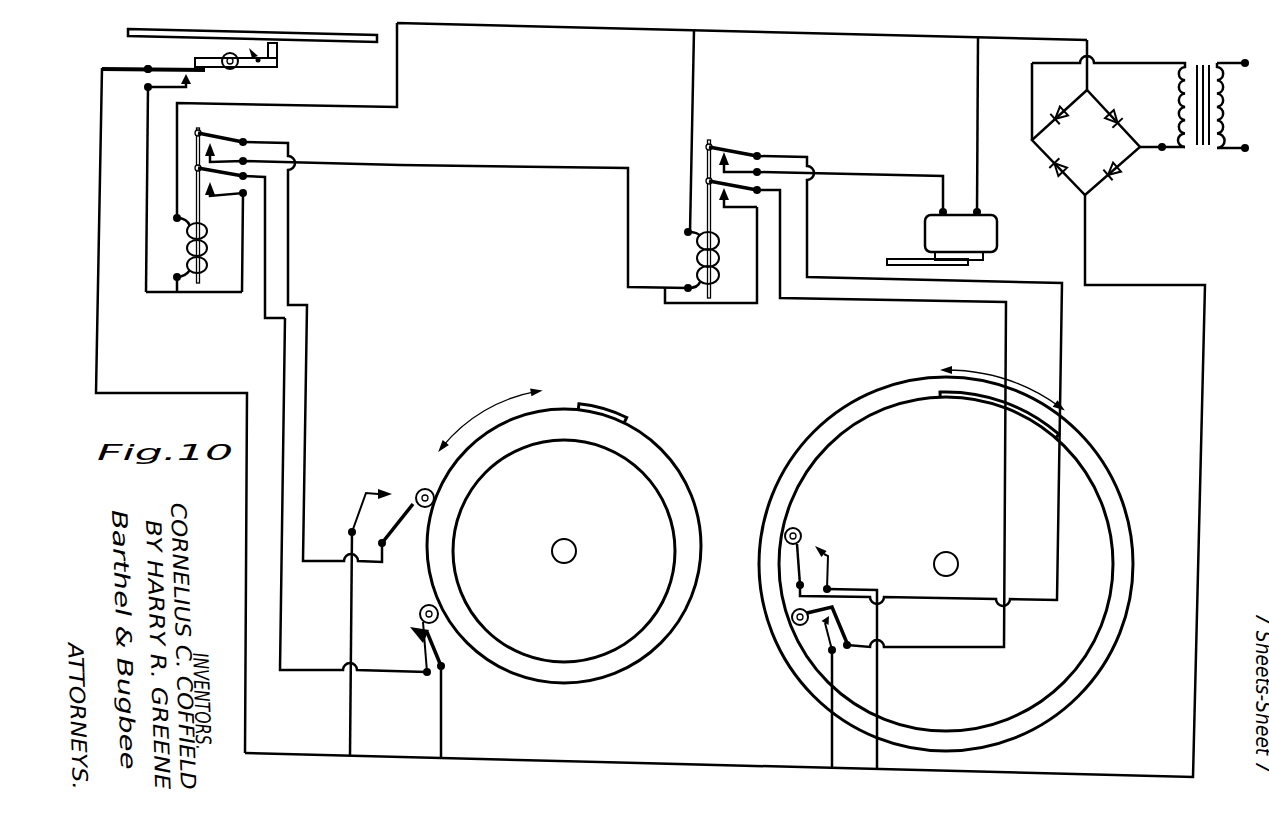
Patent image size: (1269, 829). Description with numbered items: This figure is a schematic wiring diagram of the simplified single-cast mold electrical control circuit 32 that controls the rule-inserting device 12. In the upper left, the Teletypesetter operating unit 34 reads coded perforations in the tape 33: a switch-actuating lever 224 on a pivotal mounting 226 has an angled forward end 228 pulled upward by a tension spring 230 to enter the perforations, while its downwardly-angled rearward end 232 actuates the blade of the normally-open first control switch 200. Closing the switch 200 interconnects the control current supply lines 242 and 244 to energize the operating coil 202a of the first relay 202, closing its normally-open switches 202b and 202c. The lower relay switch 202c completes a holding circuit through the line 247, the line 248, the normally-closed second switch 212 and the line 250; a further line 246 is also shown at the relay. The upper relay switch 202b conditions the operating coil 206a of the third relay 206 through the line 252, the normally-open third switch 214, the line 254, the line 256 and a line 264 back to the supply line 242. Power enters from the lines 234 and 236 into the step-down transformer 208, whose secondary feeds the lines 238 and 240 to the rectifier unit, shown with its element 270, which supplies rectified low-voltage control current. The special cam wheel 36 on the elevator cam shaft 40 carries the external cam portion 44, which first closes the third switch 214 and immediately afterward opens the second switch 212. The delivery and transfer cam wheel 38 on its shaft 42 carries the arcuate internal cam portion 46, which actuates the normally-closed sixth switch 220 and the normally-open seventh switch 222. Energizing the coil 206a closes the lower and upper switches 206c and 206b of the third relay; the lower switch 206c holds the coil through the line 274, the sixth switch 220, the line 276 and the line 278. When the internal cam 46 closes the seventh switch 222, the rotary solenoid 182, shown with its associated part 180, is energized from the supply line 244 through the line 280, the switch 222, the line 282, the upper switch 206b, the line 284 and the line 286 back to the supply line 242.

The rule-inserting device 12 is at (128, 60).
The tension spring 230 is at (246, 46).
The Teletypesetter operating tape 33 is at (363, 26).
The downwardly-angled rearward end 232 is at (193, 62).
The angled forward end 228 is at (278, 47).
The switch-actuating lever 224 is at (279, 66).
The pivotal mounting 226 is at (224, 67).
The Teletypesetter operating unit 34 is at (276, 73).
The first control switch 200 is at (138, 87).
The first relay 202 is at (254, 217).
The operating coil of first relay 202a is at (188, 247).
The upper switch of first relay 202b is at (228, 139).
The lower switch of first relay 202c is at (240, 195).
The line 256 is at (320, 165).
The conductor 246 is at (146, 232).
The line 247 is at (208, 293).
The line 248 is at (262, 309).
The line 254 is at (307, 318).
The line 252 is at (352, 613).
The conductor 264 is at (610, 158).
The third relay 206 is at (789, 164).
The operating coil of third relay 206a is at (703, 255).
The upper switch of third relay 206b is at (728, 148).
The lower switch of third relay 206c is at (752, 210).
The line 282 is at (810, 198).
The line 284 is at (922, 154).
The line 276 is at (902, 302).
The line 278 is at (712, 305).
The mounting plate 180 is at (898, 259).
The rotary solenoid 182 is at (997, 240).
The line 286 is at (977, 72).
The control current supply line 242 is at (877, 36).
The control current supply line 244 is at (1186, 275).
The line 238 is at (1100, 125).
The rectifier diode 270 is at (1112, 190).
The line 240 is at (1162, 148).
The step-down transformer 208 is at (1214, 90).
The power line 234 is at (1257, 67).
The power line 236 is at (1257, 148).
The single-cast mold electrical control circuit 32 is at (1130, 251).
The special cam wheel 36 is at (564, 525).
The switch actuating cam portion 44 is at (574, 408).
The elevator cam shaft 40 is at (576, 547).
The delivery and transfer cam wheel 38 is at (955, 558).
The arcuate internal cam portion 46 is at (969, 409).
The delivery and transfer cam shaft 42 is at (962, 534).
The third switch 214 is at (342, 528).
The second switch 212 is at (392, 652).
The line 250 is at (450, 717).
The seventh switch 222 is at (784, 592).
The sixth switch 220 is at (812, 657).
The line 280 is at (877, 757).
The line 274 is at (830, 727).